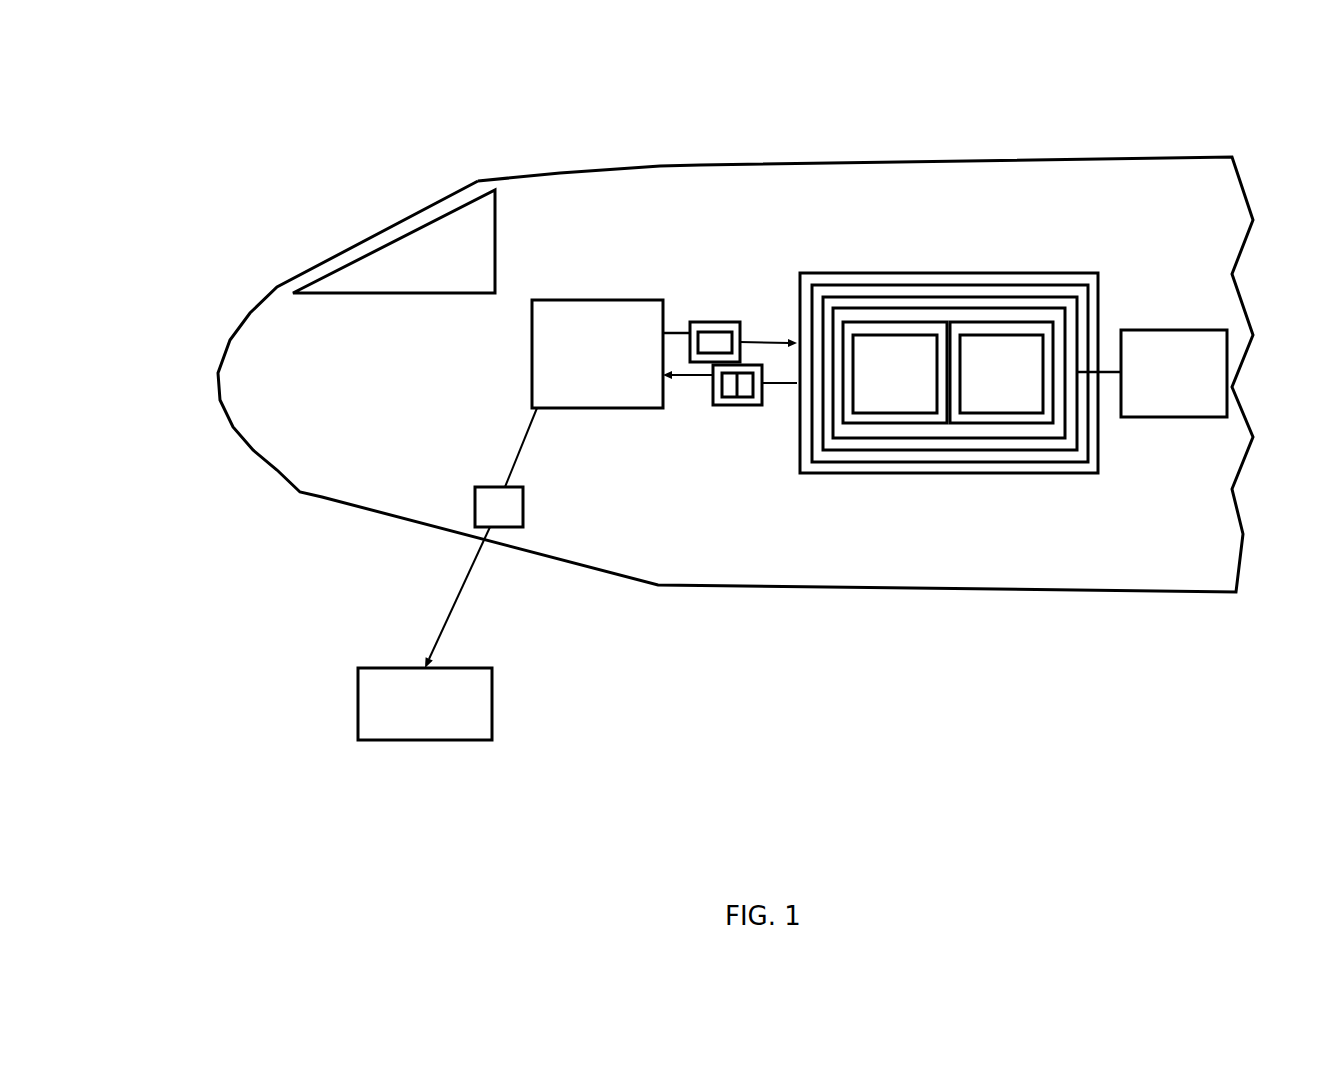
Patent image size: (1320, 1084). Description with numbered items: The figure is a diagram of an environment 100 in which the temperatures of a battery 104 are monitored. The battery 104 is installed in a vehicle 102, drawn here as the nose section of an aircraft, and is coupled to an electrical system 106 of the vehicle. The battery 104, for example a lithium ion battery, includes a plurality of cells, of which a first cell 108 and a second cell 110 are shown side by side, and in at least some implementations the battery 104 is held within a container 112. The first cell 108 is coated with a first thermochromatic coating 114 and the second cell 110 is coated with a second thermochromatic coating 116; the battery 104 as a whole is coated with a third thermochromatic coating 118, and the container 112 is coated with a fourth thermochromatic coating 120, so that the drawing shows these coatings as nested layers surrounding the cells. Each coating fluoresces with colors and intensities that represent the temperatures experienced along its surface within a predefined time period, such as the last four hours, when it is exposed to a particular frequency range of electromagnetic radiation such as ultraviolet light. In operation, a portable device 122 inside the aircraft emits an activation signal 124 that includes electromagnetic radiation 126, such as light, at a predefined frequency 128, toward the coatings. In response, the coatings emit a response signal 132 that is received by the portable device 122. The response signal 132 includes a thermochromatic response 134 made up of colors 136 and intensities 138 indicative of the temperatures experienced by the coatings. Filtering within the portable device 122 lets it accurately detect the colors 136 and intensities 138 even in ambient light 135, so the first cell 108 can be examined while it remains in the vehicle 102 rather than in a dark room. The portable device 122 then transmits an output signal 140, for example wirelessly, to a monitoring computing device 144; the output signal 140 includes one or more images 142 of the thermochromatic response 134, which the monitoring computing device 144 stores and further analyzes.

The environment 100 is at (203, 146).
The vehicle 102 is at (693, 165).
The battery 104 is at (980, 438).
The electrical system 106 is at (1148, 419).
The first cell 108 is at (915, 333).
The second cell 110 is at (1032, 335).
The container 112 is at (865, 462).
The first thermochromatic coating 114 is at (862, 322).
The second thermochromatic coating 116 is at (977, 322).
The third thermochromatic coating 118 is at (953, 450).
The fourth thermochromatic coating 120 is at (800, 473).
The portable device 122 is at (545, 300).
The activation signal 124 is at (677, 330).
The electromagnetic radiation 126 is at (708, 322).
The predefined frequency 128 is at (723, 332).
The response signal 132 is at (692, 380).
The thermochromatic response 134 is at (715, 402).
The ambient light 135 is at (635, 212).
The colors 136 is at (732, 397).
The intensities 138 is at (742, 400).
The output signal 140 is at (457, 593).
The images 142 is at (473, 503).
The monitoring computing device 144 is at (357, 670).